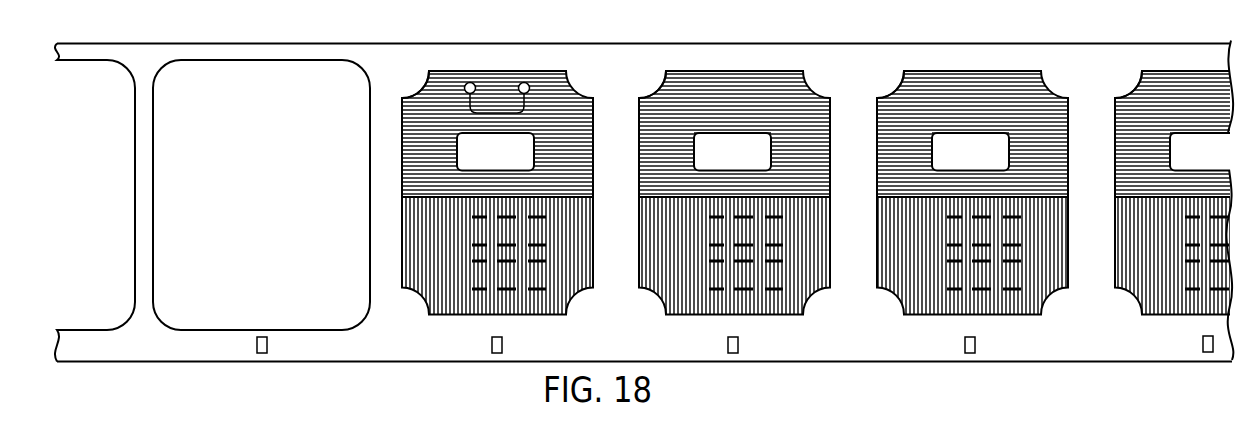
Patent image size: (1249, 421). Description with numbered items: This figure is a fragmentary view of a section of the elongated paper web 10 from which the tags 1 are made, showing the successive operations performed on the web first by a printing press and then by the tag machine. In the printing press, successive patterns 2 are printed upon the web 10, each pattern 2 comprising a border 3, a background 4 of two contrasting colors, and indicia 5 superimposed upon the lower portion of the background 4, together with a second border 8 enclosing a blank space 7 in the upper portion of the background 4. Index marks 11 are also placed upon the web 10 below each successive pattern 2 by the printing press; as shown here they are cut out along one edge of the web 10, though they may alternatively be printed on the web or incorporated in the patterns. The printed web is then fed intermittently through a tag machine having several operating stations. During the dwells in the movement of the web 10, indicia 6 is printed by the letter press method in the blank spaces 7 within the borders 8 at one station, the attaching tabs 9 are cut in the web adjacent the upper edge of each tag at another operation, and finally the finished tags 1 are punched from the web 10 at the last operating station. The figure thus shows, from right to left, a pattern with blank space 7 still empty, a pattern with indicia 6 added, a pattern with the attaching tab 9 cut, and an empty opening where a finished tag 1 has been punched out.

The tag 1 is at (292, 418).
The pattern 2 is at (597, 215).
The border 3 is at (590, 270).
The background 4 is at (418, 92).
The indicia 5 is at (447, 268).
The indicia 6 is at (468, 151).
The blank space 7 is at (530, 147).
The border 8 is at (745, 132).
The attaching tab 9 is at (497, 88).
The paper web 10 is at (1013, 40).
The index marks 11 is at (267, 345).